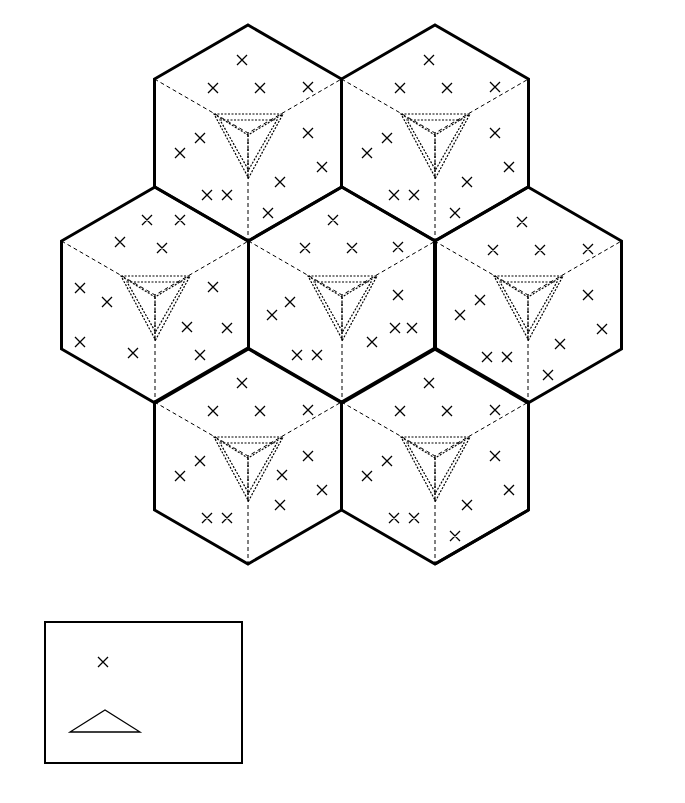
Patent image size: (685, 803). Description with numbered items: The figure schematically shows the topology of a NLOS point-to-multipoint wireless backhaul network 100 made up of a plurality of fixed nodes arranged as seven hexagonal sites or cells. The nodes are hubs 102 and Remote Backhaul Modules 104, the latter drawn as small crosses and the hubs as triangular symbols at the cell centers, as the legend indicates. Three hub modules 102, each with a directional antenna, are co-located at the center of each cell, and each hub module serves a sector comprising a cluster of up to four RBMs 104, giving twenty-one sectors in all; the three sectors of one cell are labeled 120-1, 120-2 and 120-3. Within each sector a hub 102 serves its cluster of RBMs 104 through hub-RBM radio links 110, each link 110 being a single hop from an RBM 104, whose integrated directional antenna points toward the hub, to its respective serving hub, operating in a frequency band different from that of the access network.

The wireless backhaul network 100 is at (128, 42).
The hub module 102 is at (267, 463).
The Remote Backhaul Module 104 is at (280, 477).
The hub-RBM radio link 110 is at (227, 483).
The sector 120-1 is at (475, 382).
The sector 120-2 is at (453, 553).
The sector 120-3 is at (507, 508).